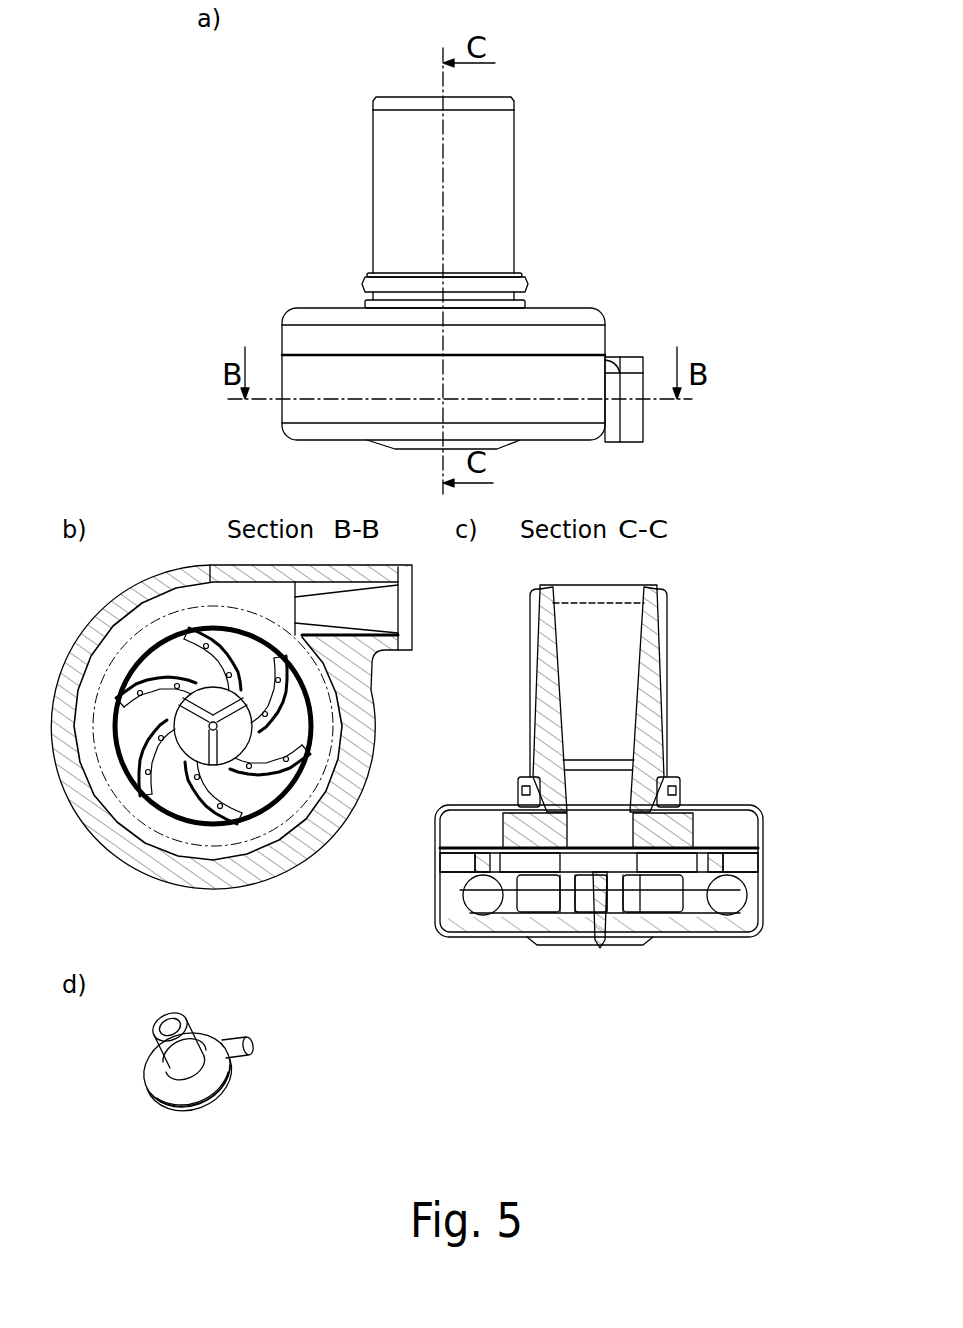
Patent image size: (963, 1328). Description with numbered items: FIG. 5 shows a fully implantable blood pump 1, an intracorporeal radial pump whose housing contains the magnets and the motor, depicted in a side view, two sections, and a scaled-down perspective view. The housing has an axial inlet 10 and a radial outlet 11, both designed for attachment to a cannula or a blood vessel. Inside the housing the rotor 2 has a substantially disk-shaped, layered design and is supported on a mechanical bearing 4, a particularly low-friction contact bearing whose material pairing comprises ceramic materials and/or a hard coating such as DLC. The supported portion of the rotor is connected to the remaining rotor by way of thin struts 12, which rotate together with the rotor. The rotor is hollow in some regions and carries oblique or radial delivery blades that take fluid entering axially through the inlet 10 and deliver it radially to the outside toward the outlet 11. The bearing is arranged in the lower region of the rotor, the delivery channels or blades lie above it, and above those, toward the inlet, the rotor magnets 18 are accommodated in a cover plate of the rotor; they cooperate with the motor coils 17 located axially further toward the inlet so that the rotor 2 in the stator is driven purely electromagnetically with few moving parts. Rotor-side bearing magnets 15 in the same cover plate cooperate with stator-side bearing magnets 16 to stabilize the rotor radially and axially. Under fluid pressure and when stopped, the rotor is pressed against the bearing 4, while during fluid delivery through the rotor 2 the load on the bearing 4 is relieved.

The pump unit 1 is at (737, 378).
The rotor 2 is at (125, 735).
The mechanical bearing 4 is at (600, 940).
The inlet 10 is at (610, 632).
The outlet 11 is at (392, 605).
The struts 12 is at (160, 772).
The rotor-side bearing magnets 15 is at (712, 880).
The stator-side bearing magnets 16 is at (745, 897).
The motor coils 17 is at (568, 828).
The rotor magnets 18 is at (508, 823).